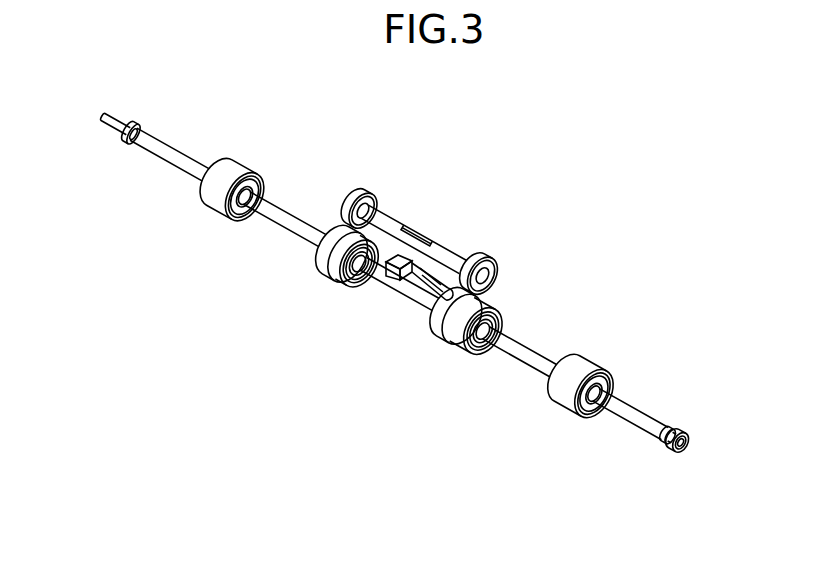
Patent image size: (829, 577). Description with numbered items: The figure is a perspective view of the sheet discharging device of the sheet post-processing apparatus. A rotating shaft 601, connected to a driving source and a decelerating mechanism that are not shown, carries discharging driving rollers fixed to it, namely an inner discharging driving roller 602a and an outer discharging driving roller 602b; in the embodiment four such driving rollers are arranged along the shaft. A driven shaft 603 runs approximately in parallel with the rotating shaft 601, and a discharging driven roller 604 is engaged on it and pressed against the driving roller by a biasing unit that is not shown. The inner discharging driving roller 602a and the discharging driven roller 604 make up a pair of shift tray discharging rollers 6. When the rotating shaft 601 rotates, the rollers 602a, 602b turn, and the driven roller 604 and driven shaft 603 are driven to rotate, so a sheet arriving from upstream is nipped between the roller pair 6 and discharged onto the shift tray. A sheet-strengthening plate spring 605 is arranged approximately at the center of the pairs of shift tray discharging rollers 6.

The pair of shift tray discharging rollers 6 is at (538, 290).
The rotating shaft 601 is at (630, 417).
The inner discharging driving roller 602a is at (495, 308).
The outer discharging driving roller 602b is at (588, 367).
The driven shaft 603 is at (400, 223).
The discharging driven roller 604 is at (493, 262).
The sheet-strengthening plate spring 605 is at (392, 270).